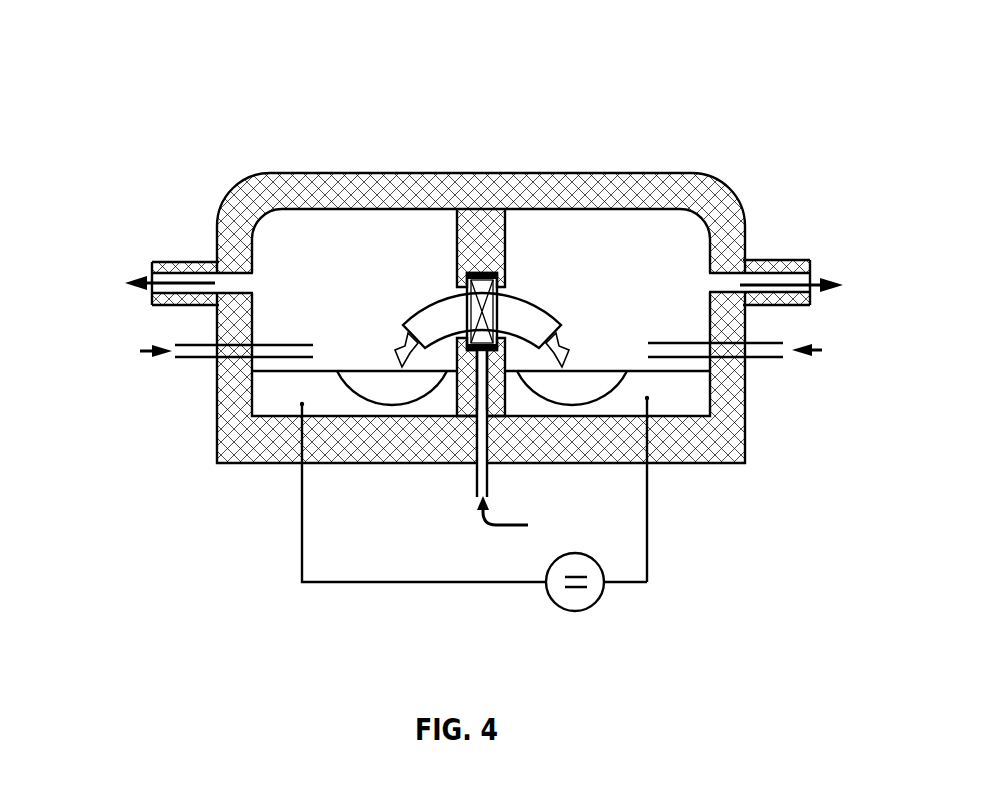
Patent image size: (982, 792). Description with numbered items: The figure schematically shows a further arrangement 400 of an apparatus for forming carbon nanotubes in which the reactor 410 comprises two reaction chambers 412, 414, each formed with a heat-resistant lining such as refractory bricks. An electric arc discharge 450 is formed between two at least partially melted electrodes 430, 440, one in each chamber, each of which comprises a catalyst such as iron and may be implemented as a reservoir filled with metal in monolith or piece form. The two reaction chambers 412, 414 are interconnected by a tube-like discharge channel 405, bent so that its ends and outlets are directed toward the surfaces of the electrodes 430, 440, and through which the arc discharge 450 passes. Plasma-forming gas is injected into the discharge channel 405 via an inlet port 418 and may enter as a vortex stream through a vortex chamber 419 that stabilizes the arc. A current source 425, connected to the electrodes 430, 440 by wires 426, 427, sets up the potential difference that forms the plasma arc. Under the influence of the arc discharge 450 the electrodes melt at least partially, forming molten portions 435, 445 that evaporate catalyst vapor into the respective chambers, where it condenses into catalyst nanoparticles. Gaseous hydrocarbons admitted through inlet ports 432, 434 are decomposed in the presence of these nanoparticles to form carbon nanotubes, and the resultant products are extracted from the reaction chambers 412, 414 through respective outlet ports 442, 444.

The arrangement of an apparatus for forming carbon nanotubes 400 is at (138, 95).
The reactor 410 is at (418, 172).
The reaction chamber 412 is at (328, 228).
The reaction chamber 414 is at (628, 232).
The vortex chamber 419 is at (505, 283).
The discharge channel 405 is at (403, 318).
The electric arc discharge 450 is at (400, 348).
The outlet port 442 is at (207, 262).
The outlet port 444 is at (768, 266).
The inlet port 432 is at (205, 357).
The inlet port 434 is at (765, 357).
The at least partially melted electrode 430 is at (273, 397).
The at least partially melted electrode 440 is at (695, 395).
The molten portion 435 is at (394, 398).
The molten portion 445 is at (585, 398).
The inlet port 418 is at (475, 478).
The wire 426 is at (397, 583).
The wire 427 is at (650, 563).
The current source 425 is at (600, 615).